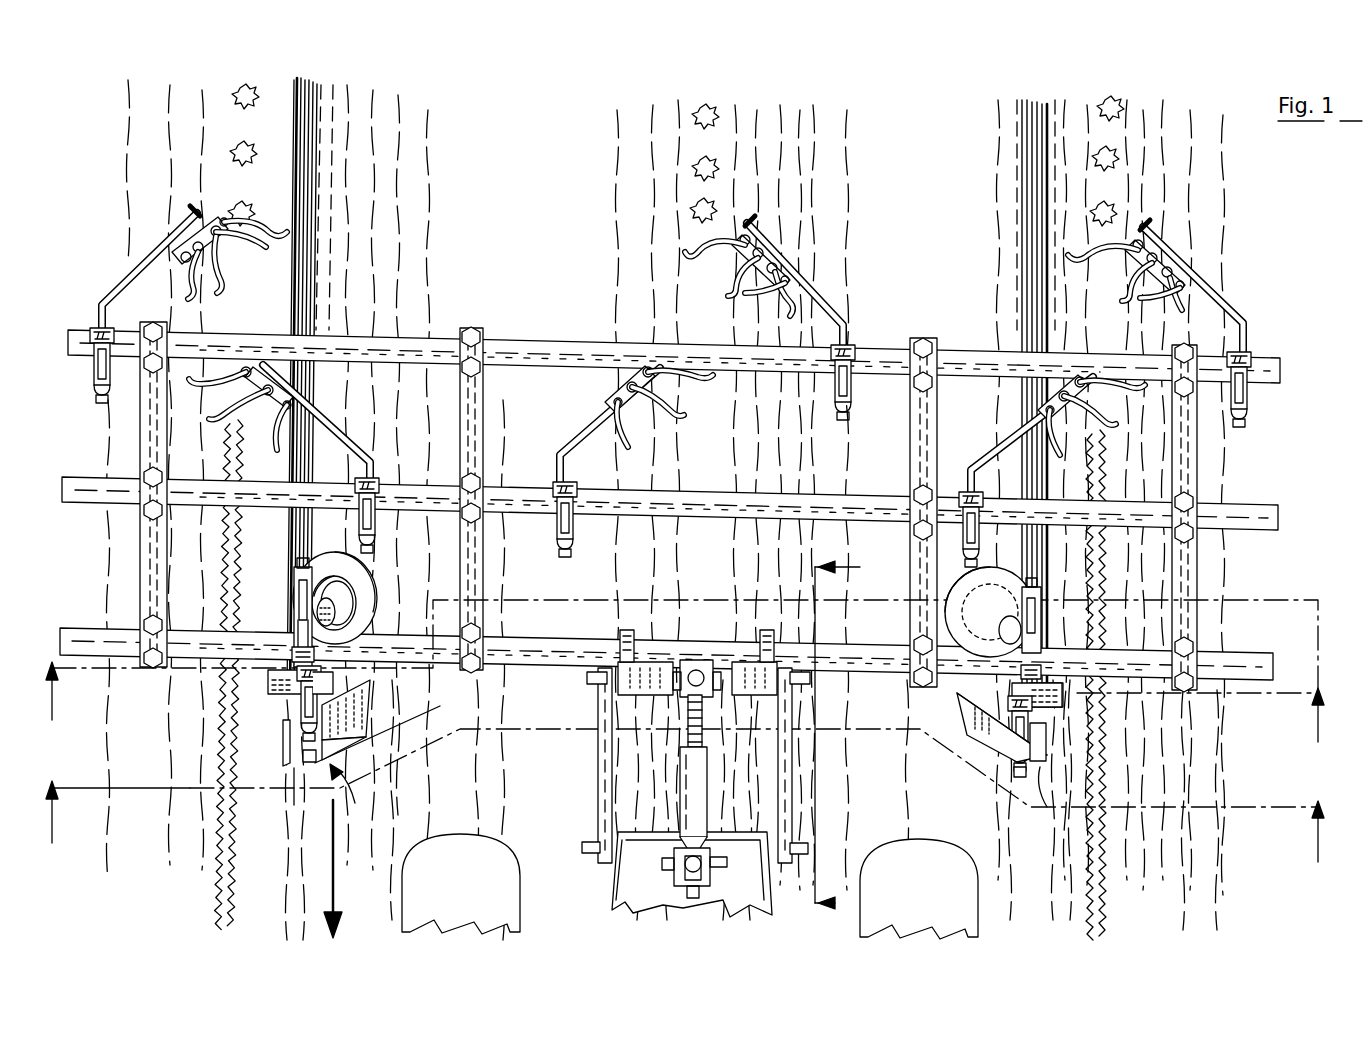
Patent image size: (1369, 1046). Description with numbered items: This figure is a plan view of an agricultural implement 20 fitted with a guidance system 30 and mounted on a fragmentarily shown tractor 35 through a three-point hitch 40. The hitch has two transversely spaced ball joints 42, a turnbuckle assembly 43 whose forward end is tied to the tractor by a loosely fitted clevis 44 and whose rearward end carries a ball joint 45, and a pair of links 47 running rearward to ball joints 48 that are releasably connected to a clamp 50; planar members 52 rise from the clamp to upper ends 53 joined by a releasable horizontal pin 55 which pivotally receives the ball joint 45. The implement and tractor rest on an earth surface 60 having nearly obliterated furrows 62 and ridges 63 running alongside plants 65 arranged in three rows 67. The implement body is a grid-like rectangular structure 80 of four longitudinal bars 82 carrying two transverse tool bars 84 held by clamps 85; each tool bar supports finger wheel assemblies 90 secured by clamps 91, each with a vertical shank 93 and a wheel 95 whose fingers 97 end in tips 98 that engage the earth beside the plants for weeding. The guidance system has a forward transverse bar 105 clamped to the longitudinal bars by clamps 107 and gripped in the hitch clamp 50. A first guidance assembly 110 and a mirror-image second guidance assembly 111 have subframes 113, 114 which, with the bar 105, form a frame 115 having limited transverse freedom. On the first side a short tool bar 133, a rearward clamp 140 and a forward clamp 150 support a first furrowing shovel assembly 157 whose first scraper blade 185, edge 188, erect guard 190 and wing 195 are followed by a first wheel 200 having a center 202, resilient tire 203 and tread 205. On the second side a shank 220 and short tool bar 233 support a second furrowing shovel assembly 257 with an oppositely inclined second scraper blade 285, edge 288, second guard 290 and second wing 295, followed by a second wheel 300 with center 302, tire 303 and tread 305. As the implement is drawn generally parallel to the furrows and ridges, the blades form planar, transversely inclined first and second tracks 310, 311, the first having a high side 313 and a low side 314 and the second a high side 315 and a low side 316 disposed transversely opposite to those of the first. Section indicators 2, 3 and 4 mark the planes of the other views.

The section line 2- 2 is at (683, 810).
The section line 3- 3 is at (684, 683).
The section line 4- 4 is at (845, 738).
The agricultural implement 20 is at (1284, 466).
The guidance system 30 is at (287, 579).
The tractor 35 is at (582, 875).
The three-point hitch 40 is at (580, 767).
The ball joints 42 is at (600, 838).
The turnbuckle assembly 43 is at (677, 789).
The clevis 44 is at (682, 881).
The ball joint 45 is at (690, 690).
The links 47 is at (610, 778).
The ball joints 48 is at (592, 680).
The clamp 50 is at (618, 646).
The planar members 52 is at (650, 665).
The upper ends 53 is at (710, 663).
The releasable horizontal pin 55 is at (720, 688).
The earth surface 60 is at (936, 203).
The furrows 62 is at (434, 816).
The ridges 63 is at (194, 831).
The plants 65 is at (246, 205).
The rows 67 is at (246, 88).
The rectangular structure 80 is at (132, 452).
The longitudinally extending bars 82 is at (168, 459).
The tool bars 84 is at (1288, 370).
The clamps 85 is at (866, 360).
The finger wheel assemblies 90 is at (185, 205).
The clamps 91 is at (92, 369).
The vertical shank 93 is at (149, 250).
The wheel 95 is at (225, 203).
The fingers 97 is at (208, 285).
The tips 98 is at (240, 258).
The transversely extending bar 105 is at (1274, 669).
The clamps 107 is at (140, 626).
The first guidance assembly 110 is at (248, 698).
The second guidance assembly 111 is at (1080, 710).
The subframe 113 is at (293, 692).
The subframe 114 is at (1055, 720).
The frame 115 is at (382, 652).
The short tool bar 133 is at (300, 640).
The rearward clamp 140 is at (298, 618).
The forward clamp 150 is at (322, 707).
The first furrowing shovel assembly 157 is at (359, 851).
The first scraper blade 185 is at (296, 788).
The edge 188 is at (284, 750).
The first guard 190 is at (282, 744).
The first wing 195 is at (346, 730).
The first wheel 200 is at (367, 576).
The center 202 is at (330, 612).
The resilient tire 203 is at (368, 609).
The tread 205 is at (340, 560).
The shank 220 is at (1033, 632).
The short tool bar 233 is at (1028, 650).
The second furrowing shovel assembly 257 is at (982, 768).
The second scraper blade 285 is at (1016, 786).
The edge 288 is at (1042, 760).
The second guard 290 is at (1044, 795).
The second wing 295 is at (966, 708).
The second wheel 300 is at (1010, 578).
The center 302 is at (1003, 623).
The tire 303 is at (995, 697).
The tread 305 is at (942, 605).
The first track 310 is at (300, 82).
The second track 311 is at (1035, 90).
The high side 313 is at (294, 130).
The low side 314 is at (330, 148).
The high side 315 is at (1053, 130).
The low side 316 is at (1021, 128).